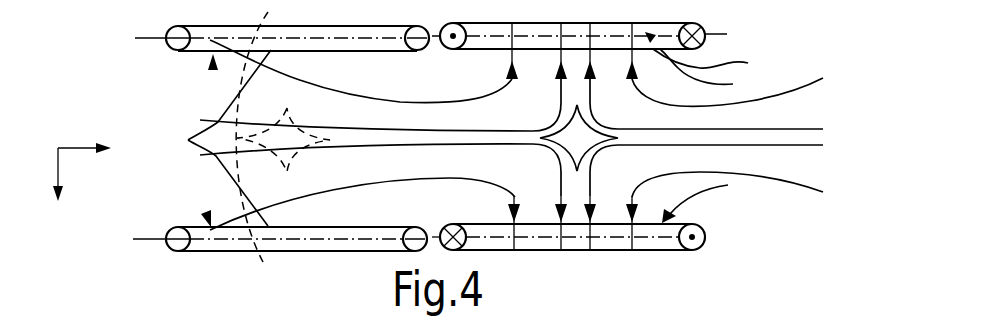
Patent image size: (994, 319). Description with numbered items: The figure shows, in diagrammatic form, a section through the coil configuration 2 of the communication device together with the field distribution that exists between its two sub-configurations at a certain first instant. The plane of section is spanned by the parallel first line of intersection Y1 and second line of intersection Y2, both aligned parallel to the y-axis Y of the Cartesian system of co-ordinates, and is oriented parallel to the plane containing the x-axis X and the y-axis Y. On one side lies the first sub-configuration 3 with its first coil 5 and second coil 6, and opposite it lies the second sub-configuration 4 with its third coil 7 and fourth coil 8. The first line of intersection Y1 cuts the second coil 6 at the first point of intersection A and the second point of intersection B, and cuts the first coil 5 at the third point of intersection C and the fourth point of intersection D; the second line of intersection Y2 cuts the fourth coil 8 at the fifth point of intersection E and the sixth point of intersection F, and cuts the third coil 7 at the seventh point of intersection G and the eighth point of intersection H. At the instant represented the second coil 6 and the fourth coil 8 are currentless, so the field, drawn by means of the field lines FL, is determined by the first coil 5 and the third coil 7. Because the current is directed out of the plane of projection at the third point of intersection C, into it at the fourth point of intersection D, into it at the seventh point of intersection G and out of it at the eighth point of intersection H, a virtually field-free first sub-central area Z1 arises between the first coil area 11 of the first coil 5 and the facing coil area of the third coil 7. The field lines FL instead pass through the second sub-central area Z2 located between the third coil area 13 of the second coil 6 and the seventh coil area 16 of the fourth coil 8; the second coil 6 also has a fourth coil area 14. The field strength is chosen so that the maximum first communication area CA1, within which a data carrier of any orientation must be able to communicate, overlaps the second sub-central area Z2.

The coil configuration 2 is at (779, 73).
The first sub-configuration 3 is at (698, 0).
The second sub-configuration 4 is at (777, 213).
The first coil 5 is at (708, 63).
The second coil 6 is at (197, 53).
The third coil 7 is at (686, 224).
The fourth coil 8 is at (193, 226).
The first coil area 11 is at (710, 73).
The third coil area 13 is at (213, 62).
The fourth coil area 14 is at (706, 200).
The seventh coil area 16 is at (207, 214).
The first point of intersection A is at (185, 52).
The second point of intersection B is at (421, 52).
The third point of intersection C is at (453, 50).
The fourth point of intersection D is at (712, 64).
The fifth point of intersection E is at (166, 229).
The sixth point of intersection F is at (426, 226).
The seventh point of intersection G is at (452, 224).
The eighth point of intersection H is at (705, 237).
The x-axis X is at (60, 154).
The y-axis Y is at (60, 147).
The first line of intersection Y1 is at (150, 38).
The second line of intersection Y2 is at (150, 239).
The first communication area CA1 is at (242, 82).
The field lines FL is at (188, 140).
The first sub-central area Z1 is at (590, 123).
The second sub-central area Z2 is at (292, 123).